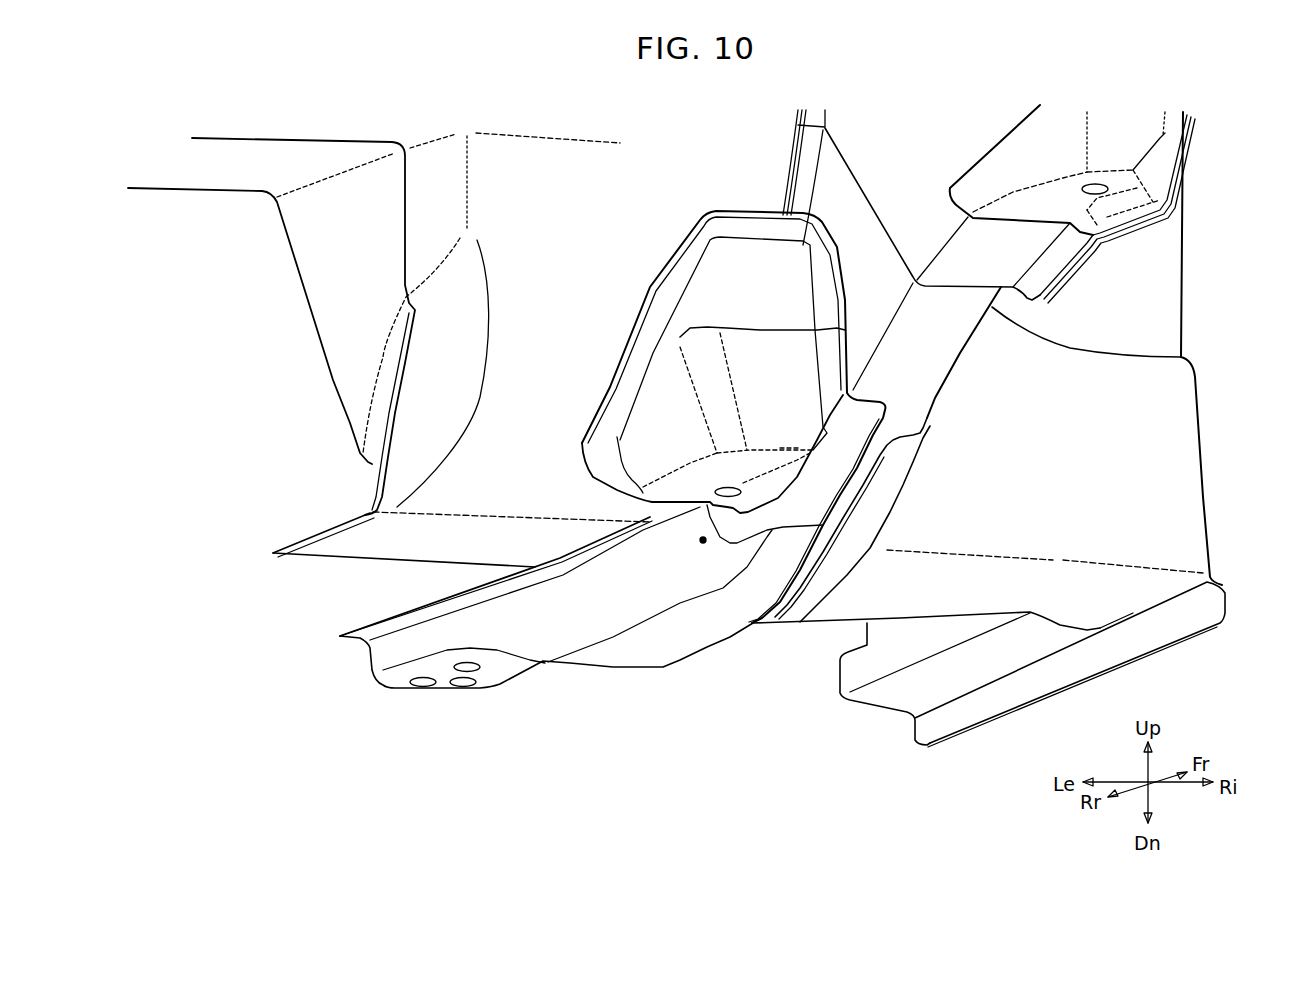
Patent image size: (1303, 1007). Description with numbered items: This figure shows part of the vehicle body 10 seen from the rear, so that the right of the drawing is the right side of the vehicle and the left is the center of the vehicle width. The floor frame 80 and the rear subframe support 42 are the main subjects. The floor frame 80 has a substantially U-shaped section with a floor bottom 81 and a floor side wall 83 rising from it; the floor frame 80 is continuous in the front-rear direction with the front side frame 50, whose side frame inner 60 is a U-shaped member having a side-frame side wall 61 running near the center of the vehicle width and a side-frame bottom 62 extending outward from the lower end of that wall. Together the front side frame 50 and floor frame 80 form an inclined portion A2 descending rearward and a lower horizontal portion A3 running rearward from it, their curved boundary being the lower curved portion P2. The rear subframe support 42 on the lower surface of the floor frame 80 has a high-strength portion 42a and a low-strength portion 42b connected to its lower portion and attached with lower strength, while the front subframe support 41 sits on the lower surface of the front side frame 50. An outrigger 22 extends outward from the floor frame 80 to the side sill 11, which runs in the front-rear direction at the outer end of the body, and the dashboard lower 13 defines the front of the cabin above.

The vehicle body 10 is at (160, 137).
The side sill 11 is at (950, 680).
The dashboard lower 13 is at (343, 543).
The outrigger 22 is at (893, 593).
The front subframe support 41 is at (1027, 162).
The rear subframe support 42 is at (733, 361).
The high-strength portion 42a is at (770, 263).
The low-strength portion 42b is at (740, 353).
The front side frame 50 is at (1041, 188).
The side frame inner 60 is at (1072, 188).
The side-frame side wall 61 is at (868, 140).
The side-frame bottom 62 is at (970, 262).
The floor frame 80 is at (581, 635).
The floor bottom 81 is at (922, 363).
The floor side wall 83 is at (550, 632).
The inclined portion A2 is at (885, 304).
The lower horizontal portion A3 is at (594, 622).
The lower curved portion P2 is at (703, 544).